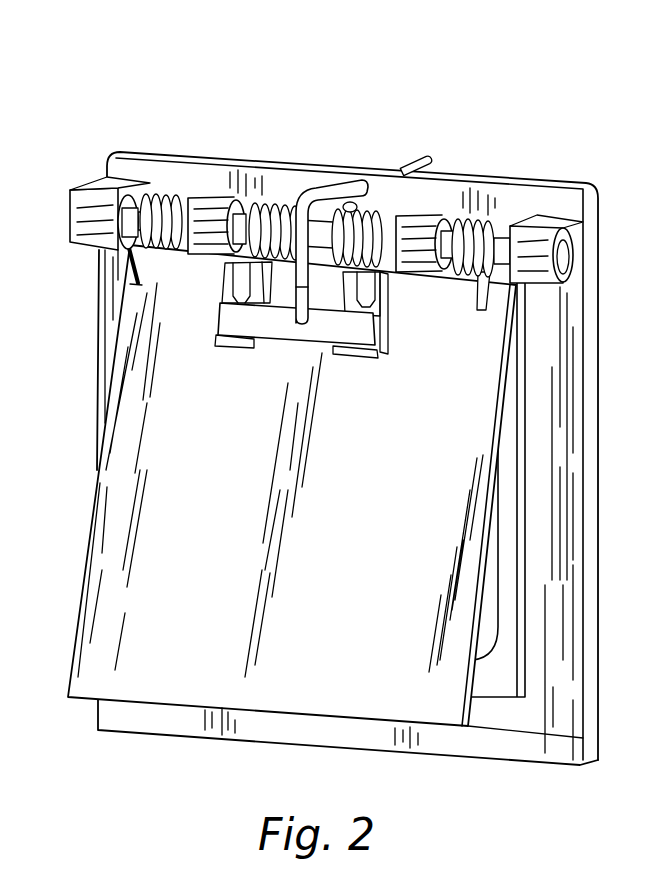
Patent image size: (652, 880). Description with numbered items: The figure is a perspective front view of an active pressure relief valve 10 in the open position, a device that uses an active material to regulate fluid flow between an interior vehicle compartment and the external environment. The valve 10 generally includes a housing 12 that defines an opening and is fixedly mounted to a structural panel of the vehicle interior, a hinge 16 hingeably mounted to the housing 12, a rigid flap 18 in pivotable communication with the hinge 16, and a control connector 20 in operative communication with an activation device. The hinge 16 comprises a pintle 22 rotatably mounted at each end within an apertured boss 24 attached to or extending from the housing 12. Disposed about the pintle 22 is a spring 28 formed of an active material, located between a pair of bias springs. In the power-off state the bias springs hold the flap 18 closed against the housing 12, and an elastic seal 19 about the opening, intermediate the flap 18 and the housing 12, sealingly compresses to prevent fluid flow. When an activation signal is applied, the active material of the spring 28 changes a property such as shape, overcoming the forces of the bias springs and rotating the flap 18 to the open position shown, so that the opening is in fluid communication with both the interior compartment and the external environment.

The active pressure relief valve 10 is at (516, 100).
The housing 12 is at (160, 733).
The hinge 16 is at (436, 205).
The rigid flap 18 is at (317, 720).
The elastic seal 19 is at (500, 660).
The control connector 20 is at (394, 168).
The pintle 22 is at (566, 257).
The apertured boss 24 is at (75, 217).
The spring 28 is at (295, 185).